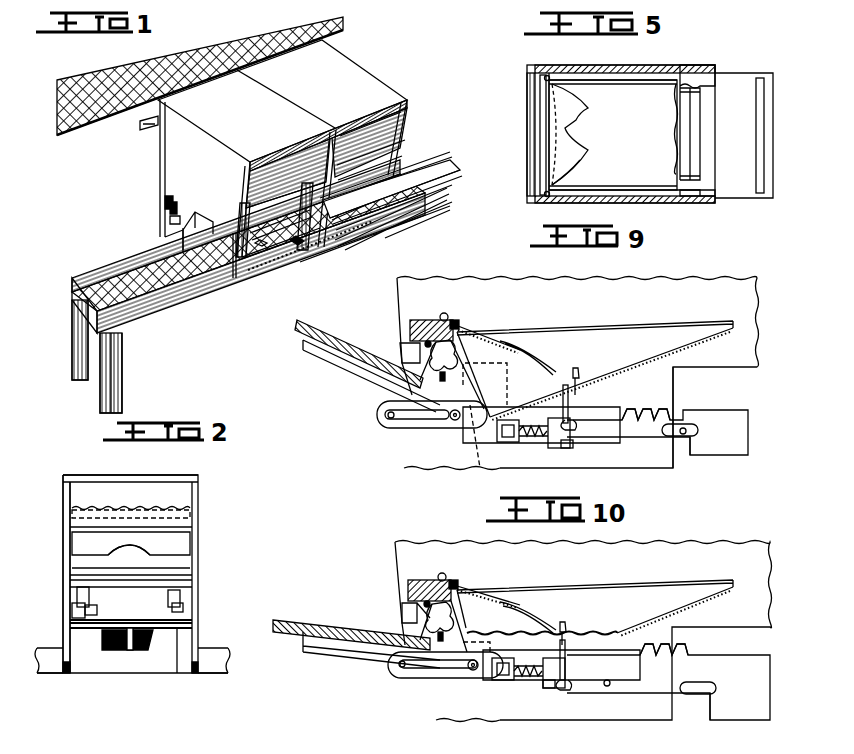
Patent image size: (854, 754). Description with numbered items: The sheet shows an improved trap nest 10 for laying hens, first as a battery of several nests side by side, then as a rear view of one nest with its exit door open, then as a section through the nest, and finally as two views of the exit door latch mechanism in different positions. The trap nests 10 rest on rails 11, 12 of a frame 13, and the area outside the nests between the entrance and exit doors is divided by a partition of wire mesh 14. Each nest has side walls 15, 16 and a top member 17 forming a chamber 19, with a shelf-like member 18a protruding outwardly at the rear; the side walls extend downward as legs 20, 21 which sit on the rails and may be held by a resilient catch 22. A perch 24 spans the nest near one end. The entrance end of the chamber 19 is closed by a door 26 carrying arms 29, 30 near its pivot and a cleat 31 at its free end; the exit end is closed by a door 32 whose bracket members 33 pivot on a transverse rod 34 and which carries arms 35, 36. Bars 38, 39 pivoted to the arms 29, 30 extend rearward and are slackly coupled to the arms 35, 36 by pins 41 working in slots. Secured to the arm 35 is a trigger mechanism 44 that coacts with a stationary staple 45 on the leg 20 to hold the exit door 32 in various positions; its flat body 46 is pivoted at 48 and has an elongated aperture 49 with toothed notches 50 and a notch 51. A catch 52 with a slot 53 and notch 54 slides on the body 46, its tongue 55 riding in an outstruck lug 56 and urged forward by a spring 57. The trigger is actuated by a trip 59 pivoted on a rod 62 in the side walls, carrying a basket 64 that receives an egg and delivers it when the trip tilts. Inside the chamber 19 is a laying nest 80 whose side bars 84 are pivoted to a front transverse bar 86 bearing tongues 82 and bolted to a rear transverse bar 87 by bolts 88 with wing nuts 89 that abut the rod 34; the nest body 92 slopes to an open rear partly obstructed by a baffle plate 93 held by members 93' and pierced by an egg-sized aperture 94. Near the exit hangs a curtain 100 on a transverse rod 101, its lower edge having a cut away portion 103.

In FIG. 1, the trap nest 10 is at (369, 69).
In FIG. 5, the trap nest 10 is at (520, 80).
In FIG. 2, the trap nest 10 is at (205, 511).
In FIG. 1, the rail 11 is at (88, 274).
In FIG. 2, the rail 11 is at (222, 675).
In FIG. 1, the rail 12 is at (155, 307).
In FIG. 1, the frame 13 is at (94, 404).
In FIG. 1, the wire mesh 14 is at (94, 124).
In FIG. 1, the side wall 15 is at (338, 135).
In FIG. 5, the side wall 15 is at (690, 198).
In FIG. 2, the side wall 15 is at (196, 558).
In FIG. 1, the side wall 16 is at (323, 140).
In FIG. 5, the side wall 16 is at (580, 66).
In FIG. 9, the side wall 16 is at (745, 292).
In FIG. 2, the side wall 16 is at (62, 490).
In FIG. 10, the side wall 16 is at (685, 550).
In FIG. 1, the top member 17 is at (335, 72).
In FIG. 2, the top member 17 is at (83, 475).
In FIG. 1, the shelf-like member 18a is at (140, 125).
In FIG. 1, the chamber 19 is at (400, 128).
In FIG. 5, the chamber 19 is at (614, 98).
In FIG. 9, the chamber 19 is at (483, 272).
In FIG. 2, the chamber 19 is at (184, 571).
In FIG. 10, the chamber 19 is at (630, 566).
In FIG. 1, the leg 20 is at (183, 236).
In FIG. 9, the leg 20 is at (674, 384).
In FIG. 2, the leg 20 is at (200, 660).
In FIG. 1, the leg 21 is at (340, 240).
In FIG. 1, the resilient catch 22 is at (300, 244).
In FIG. 2, the resilient catch 22 is at (66, 674).
In FIG. 1, the transverse member or perch 24 is at (385, 163).
In FIG. 5, the transverse member or perch 24 is at (700, 66).
In FIG. 1, the entrance door 26 is at (447, 196).
In FIG. 5, the entrance door 26 is at (745, 74).
In FIG. 1, the arm 29 is at (318, 238).
In FIG. 1, the arm 30 is at (248, 262).
In FIG. 1, the cleat 31 is at (423, 200).
In FIG. 5, the cleat 31 is at (768, 106).
In FIG. 1, the exit door 32 is at (160, 159).
In FIG. 5, the exit door 32 is at (527, 99).
In FIG. 9, the exit door 32 is at (332, 332).
In FIG. 2, the exit door 32 is at (184, 587).
In FIG. 10, the exit door 32 is at (306, 624).
In FIG. 9, the bracket member 33 is at (402, 352).
In FIG. 10, the bracket member 33 is at (402, 608).
In FIG. 9, the transverse rod 34 is at (424, 345).
In FIG. 10, the transverse rod 34 is at (423, 605).
In FIG. 9, the arm 35 is at (366, 374).
In FIG. 2, the arm 35 is at (72, 590).
In FIG. 10, the arm 35 is at (330, 658).
In FIG. 1, the arm 36 is at (170, 222).
In FIG. 2, the arm 36 is at (189, 596).
In FIG. 1, the bar 38 is at (266, 246).
In FIG. 9, the bar 38 is at (377, 403).
In FIG. 2, the bar 38 is at (98, 604).
In FIG. 10, the bar 38 is at (390, 680).
In FIG. 1, the bar 39 is at (166, 200).
In FIG. 2, the bar 39 is at (184, 610).
In FIG. 9, the pin 41 is at (452, 422).
In FIG. 10, the pin 41 is at (470, 672).
In FIG. 9, the trigger mechanism 44 is at (756, 418).
In FIG. 2, the trigger mechanism 44 is at (66, 615).
In FIG. 10, the trigger mechanism 44 is at (764, 670).
In FIG. 9, the U-shaped member or staple 45 is at (570, 390).
In FIG. 10, the U-shaped member or staple 45 is at (562, 632).
In FIG. 9, the body portion 46 is at (750, 440).
In FIG. 10, the body portion 46 is at (730, 712).
In FIG. 9, the pivot 48 is at (536, 418).
In FIG. 10, the pivot 48 is at (543, 657).
In FIG. 9, the elongated aperture 49 is at (392, 420).
In FIG. 10, the elongated aperture 49 is at (402, 668).
In FIG. 9, the toothed notches 50 is at (666, 410).
In FIG. 10, the toothed notches 50 is at (690, 668).
In FIG. 9, the notch 51 is at (570, 418).
In FIG. 10, the notch 51 is at (592, 668).
In FIG. 9, the catch 52 is at (567, 445).
In FIG. 10, the catch 52 is at (548, 690).
In FIG. 9, the slot 53 is at (575, 430).
In FIG. 10, the slot 53 is at (568, 690).
In FIG. 9, the notch 54 is at (552, 450).
In FIG. 10, the notch 54 is at (580, 653).
In FIG. 9, the tongue 55 is at (500, 444).
In FIG. 10, the tongue 55 is at (500, 683).
In FIG. 9, the outstruck lug 56 is at (512, 444).
In FIG. 10, the outstruck lug 56 is at (514, 684).
In FIG. 9, the spring 57 is at (530, 446).
In FIG. 10, the spring 57 is at (532, 686).
In FIG. 2, the trip 59 is at (96, 630).
In FIG. 2, the rod 62 is at (177, 656).
In FIG. 2, the basket 64 is at (118, 650).
In FIG. 1, the laying nest 80 is at (378, 131).
In FIG. 5, the laying nest 80 is at (602, 83).
In FIG. 9, the laying nest 80 is at (585, 318).
In FIG. 10, the laying nest 80 is at (560, 582).
In FIG. 5, the tongues 82 is at (700, 87).
In FIG. 5, the side bar 84 is at (643, 80).
In FIG. 9, the side bar 84 is at (614, 323).
In FIG. 10, the side bar 84 is at (588, 590).
In FIG. 5, the front transverse bar 86 is at (678, 112).
In FIG. 5, the rear transverse bar 87 is at (540, 122).
In FIG. 9, the rear transverse bar 87 is at (418, 320).
In FIG. 10, the rear transverse bar 87 is at (414, 580).
In FIG. 5, the bolts 88 is at (546, 75).
In FIG. 9, the bolts 88 is at (444, 313).
In FIG. 10, the bolts 88 is at (442, 573).
In FIG. 9, the wing nuts 89 is at (455, 356).
In FIG. 10, the wing nuts 89 is at (455, 608).
In FIG. 5, the nest body 92 is at (644, 176).
In FIG. 9, the nest body 92 is at (642, 330).
In FIG. 10, the nest body 92 is at (634, 600).
In FIG. 5, the baffle plate 93 is at (584, 172).
In FIG. 9, the baffle plate 93 is at (489, 330).
In FIG. 10, the baffle plate 93 is at (488, 588).
In FIG. 9, the members 93' is at (467, 312).
In FIG. 10, the members 93' is at (469, 572).
In FIG. 5, the aperture 94 is at (584, 110).
In FIG. 9, the aperture 94 is at (521, 340).
In FIG. 10, the aperture 94 is at (518, 600).
In FIG. 2, the curtain 100 is at (180, 545).
In FIG. 2, the transverse rod 101 is at (180, 500).
In FIG. 2, the cut away portion 103 is at (132, 550).